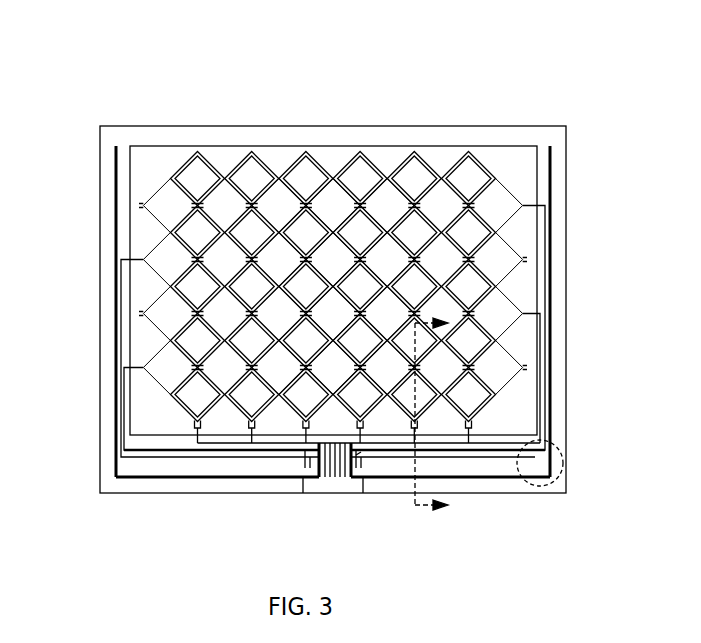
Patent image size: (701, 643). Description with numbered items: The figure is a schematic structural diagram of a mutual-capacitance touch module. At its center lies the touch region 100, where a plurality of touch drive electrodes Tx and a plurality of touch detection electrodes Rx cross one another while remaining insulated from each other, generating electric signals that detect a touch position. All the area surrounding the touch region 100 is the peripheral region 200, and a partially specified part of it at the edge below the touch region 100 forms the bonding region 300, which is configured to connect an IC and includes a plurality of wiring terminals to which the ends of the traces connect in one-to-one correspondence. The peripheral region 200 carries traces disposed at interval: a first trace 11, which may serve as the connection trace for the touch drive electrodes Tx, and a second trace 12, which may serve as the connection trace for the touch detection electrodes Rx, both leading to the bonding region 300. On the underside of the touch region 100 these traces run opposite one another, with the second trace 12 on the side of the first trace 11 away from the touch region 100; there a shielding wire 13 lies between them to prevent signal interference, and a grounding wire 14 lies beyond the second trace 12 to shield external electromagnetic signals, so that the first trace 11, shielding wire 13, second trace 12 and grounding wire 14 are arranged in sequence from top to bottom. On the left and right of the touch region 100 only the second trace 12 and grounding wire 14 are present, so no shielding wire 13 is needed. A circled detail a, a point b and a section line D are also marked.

The touch region 100 is at (522, 165).
The peripheral region 200 is at (343, 128).
The bonding region 300 is at (330, 482).
The first trace 11 is at (270, 460).
The second trace 12 is at (116, 412).
The shielding wire 13 is at (133, 455).
The grounding wire 14 is at (178, 478).
The touch drive electrodes Tx is at (199, 178).
The touch detection electrodes Rx is at (155, 207).
The enlarged region a is at (535, 488).
The point b is at (358, 457).
The section line D- D is at (431, 420).